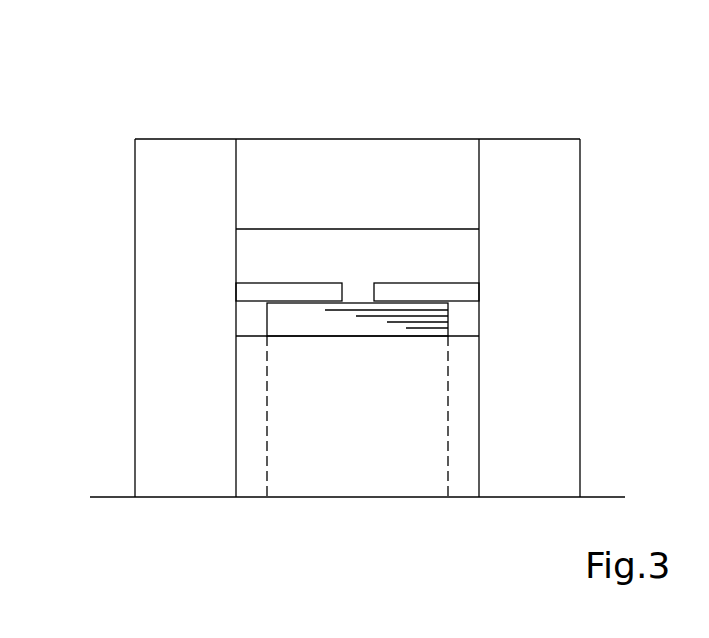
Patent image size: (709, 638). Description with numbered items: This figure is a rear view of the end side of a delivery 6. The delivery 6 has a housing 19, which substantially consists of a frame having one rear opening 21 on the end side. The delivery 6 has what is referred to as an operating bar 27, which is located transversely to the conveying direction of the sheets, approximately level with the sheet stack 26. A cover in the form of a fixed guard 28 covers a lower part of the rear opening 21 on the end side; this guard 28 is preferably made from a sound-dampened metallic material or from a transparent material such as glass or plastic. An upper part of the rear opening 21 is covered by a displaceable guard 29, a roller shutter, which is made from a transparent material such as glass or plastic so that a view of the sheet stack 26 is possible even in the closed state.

The delivery 6 is at (252, 99).
The housing 19 is at (432, 153).
The rear opening 21 is at (479, 243).
The sheet stack 26 is at (278, 320).
The operating bar 27 is at (248, 292).
The fixed guard 28 is at (466, 384).
The displaceable guard 29 is at (456, 258).